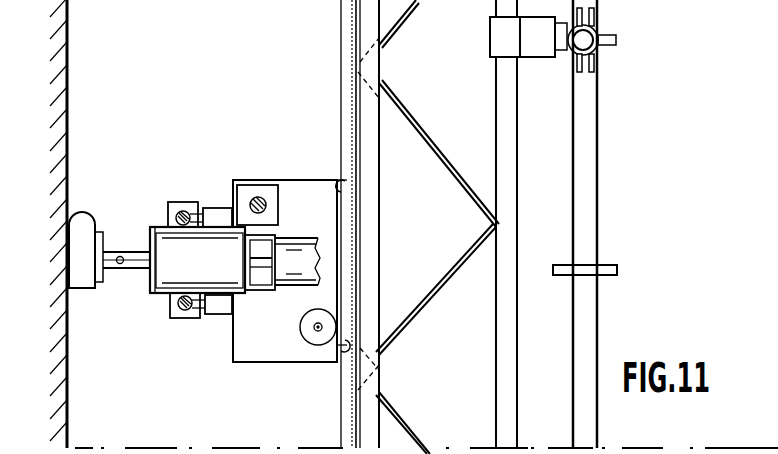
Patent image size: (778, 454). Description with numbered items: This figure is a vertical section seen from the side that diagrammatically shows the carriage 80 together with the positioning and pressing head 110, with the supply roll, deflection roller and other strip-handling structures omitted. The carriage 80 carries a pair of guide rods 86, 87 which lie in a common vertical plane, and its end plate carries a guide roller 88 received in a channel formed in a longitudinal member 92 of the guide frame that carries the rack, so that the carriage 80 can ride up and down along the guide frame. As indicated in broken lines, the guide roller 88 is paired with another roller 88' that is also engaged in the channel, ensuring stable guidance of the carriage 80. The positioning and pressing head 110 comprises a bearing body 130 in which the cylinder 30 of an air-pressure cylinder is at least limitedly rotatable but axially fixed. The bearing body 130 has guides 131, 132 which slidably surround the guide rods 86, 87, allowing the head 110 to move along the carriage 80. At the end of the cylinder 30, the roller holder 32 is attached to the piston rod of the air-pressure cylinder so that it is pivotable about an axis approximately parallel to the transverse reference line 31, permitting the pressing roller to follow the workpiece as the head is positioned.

The cylinder 30 is at (296, 238).
The transverse reference line 31 is at (120, 252).
The roller holder 32 is at (105, 224).
The carriage 80 is at (222, 346).
The guide rod 86 is at (185, 211).
The guide rod 87 is at (187, 320).
The guide roller 88 is at (327, 154).
The roller 88' is at (322, 386).
The longitudinal member 92 is at (343, 270).
The positioning and pressing head 110 is at (149, 306).
The bearing body 130 is at (150, 291).
The guide 131 is at (170, 213).
The guide 132 is at (172, 314).